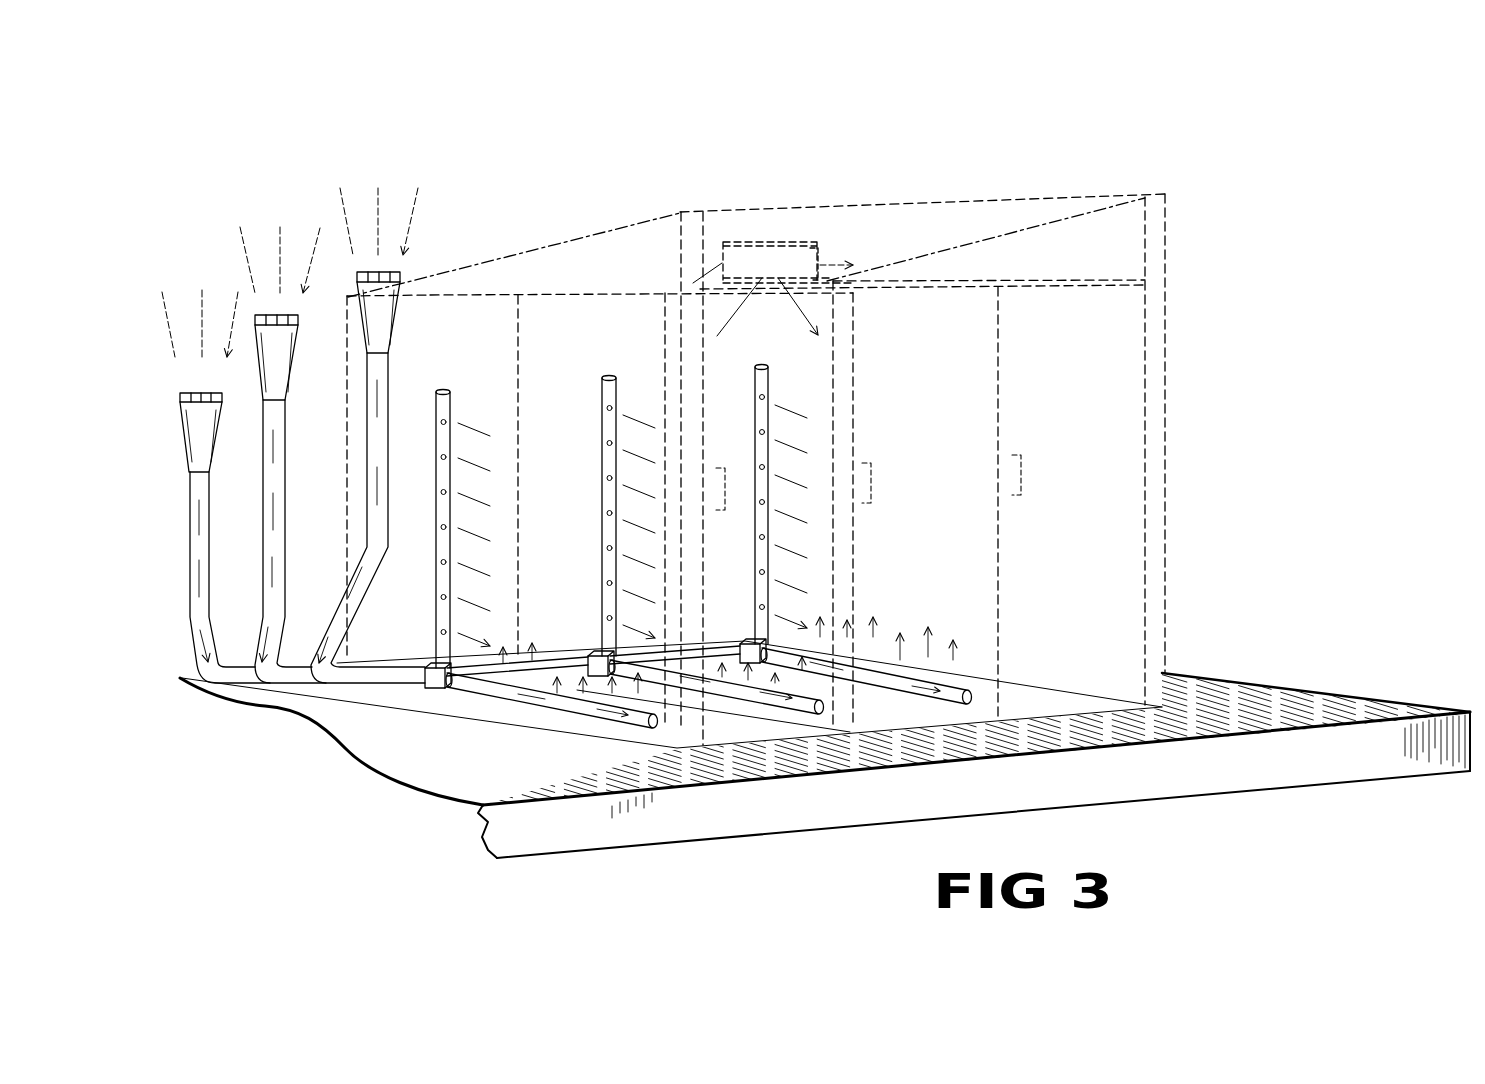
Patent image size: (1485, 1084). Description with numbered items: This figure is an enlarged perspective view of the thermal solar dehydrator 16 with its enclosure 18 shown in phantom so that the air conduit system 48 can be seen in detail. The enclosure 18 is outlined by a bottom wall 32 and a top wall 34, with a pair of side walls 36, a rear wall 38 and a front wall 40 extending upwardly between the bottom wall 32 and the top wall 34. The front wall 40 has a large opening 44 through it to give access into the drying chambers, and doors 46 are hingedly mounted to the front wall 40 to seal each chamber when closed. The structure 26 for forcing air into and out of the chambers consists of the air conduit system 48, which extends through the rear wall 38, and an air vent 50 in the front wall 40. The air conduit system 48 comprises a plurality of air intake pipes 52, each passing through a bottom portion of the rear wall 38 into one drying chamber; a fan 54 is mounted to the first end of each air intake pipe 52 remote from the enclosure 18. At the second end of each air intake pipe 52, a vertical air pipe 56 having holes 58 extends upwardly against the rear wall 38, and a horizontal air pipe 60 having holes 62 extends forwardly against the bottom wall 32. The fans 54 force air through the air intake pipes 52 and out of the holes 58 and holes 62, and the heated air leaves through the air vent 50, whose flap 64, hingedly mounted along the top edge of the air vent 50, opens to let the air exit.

The thermal solar dehydrator 16 is at (1303, 421).
The enclosure 18 is at (787, 442).
The structure for forcing air 26 is at (397, 376).
The bottom wall 32 is at (617, 735).
The top wall 34 is at (566, 238).
The side walls 36 is at (480, 253).
The rear wall 38 is at (344, 443).
The front wall 40 is at (913, 222).
The large opening 44 is at (1148, 402).
The doors 46 is at (1135, 530).
The air conduit system 48 is at (595, 526).
The air vent 50 is at (830, 251).
The air intake pipes 52 is at (197, 552).
The fans 54 is at (195, 421).
The vertical air pipes 56 is at (605, 567).
The holes 58 is at (607, 625).
The horizontal air pipes 60 is at (481, 687).
The holes 62 is at (928, 677).
The flap 64 is at (786, 246).